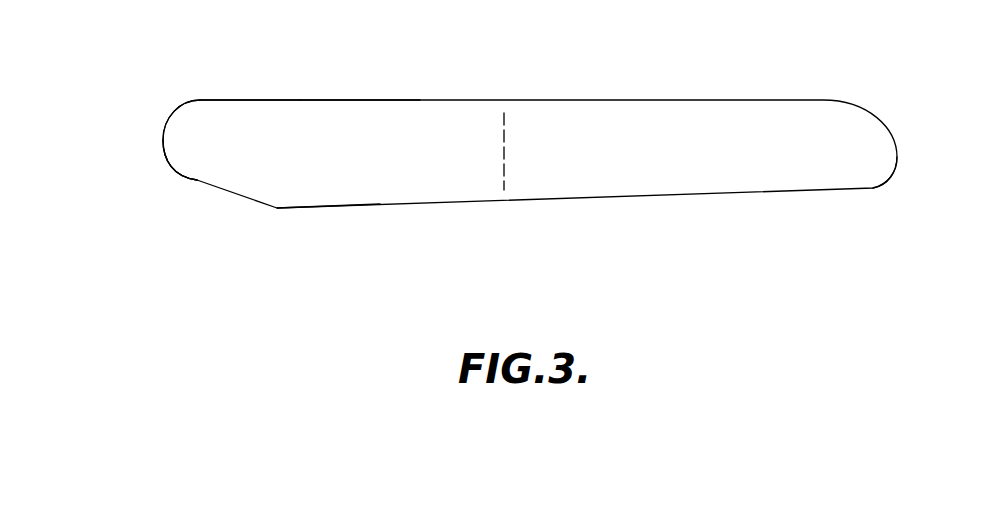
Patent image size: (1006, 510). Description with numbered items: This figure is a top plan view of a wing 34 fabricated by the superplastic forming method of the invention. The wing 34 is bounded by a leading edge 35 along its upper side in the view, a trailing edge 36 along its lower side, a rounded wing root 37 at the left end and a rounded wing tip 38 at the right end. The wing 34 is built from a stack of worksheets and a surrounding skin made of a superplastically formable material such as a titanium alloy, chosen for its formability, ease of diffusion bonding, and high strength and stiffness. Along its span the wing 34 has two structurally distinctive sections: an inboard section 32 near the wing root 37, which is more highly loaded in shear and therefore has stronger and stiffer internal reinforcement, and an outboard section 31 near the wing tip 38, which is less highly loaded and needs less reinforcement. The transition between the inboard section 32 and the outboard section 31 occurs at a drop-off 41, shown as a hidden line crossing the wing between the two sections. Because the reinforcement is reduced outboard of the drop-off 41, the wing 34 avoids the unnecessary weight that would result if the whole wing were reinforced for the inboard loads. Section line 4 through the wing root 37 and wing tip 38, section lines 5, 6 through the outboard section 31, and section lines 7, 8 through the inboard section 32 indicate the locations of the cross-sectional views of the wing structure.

The outboard section 31 is at (742, 98).
The inboard section 32 is at (354, 86).
The wing 34 is at (152, 86).
The leading edge 35 is at (278, 100).
The trailing edge 36 is at (323, 210).
The wing root 37 is at (160, 162).
The wing tip 38 is at (893, 179).
The drop-off 41 is at (514, 181).
The section line 4- 4 is at (145, 140).
The section line 5,6 (upper) 5 is at (697, 100).
The section line 5,6 (lower) 6 is at (696, 207).
The section line 7,8 (upper) 7 is at (443, 100).
The section line 7,8 (lower) 8 is at (440, 213).